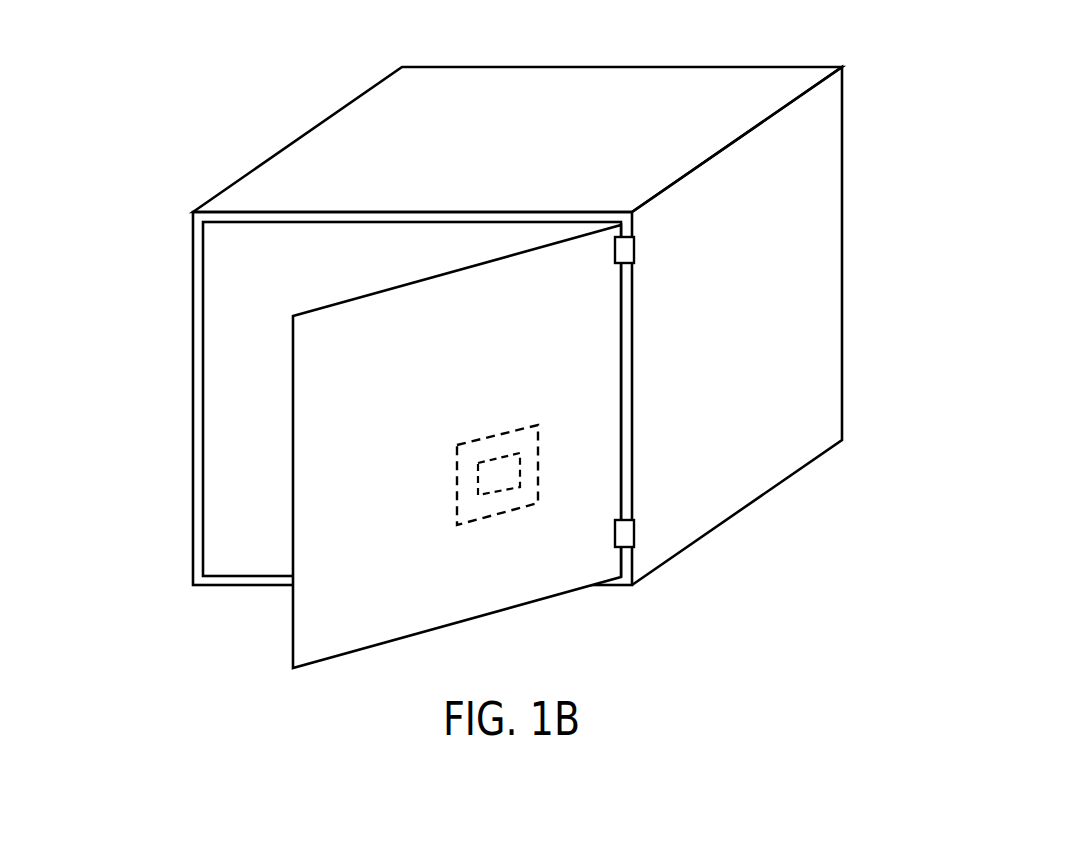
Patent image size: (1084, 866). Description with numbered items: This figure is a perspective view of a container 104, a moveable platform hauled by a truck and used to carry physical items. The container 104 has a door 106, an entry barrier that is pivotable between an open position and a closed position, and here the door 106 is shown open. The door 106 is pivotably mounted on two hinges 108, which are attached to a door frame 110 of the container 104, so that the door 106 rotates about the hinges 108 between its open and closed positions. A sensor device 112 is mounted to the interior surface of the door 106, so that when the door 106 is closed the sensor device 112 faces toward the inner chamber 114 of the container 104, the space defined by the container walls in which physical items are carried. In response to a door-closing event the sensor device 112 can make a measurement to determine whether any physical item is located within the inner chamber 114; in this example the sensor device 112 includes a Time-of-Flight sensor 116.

The container 104 is at (557, 85).
The door 106 is at (338, 323).
The hinges 108 is at (634, 250).
The door frame 110 is at (195, 255).
The sensor device 112 is at (500, 433).
The inner chamber 114 is at (235, 425).
The Time-of-Flight (ToF) sensor 116 is at (497, 490).